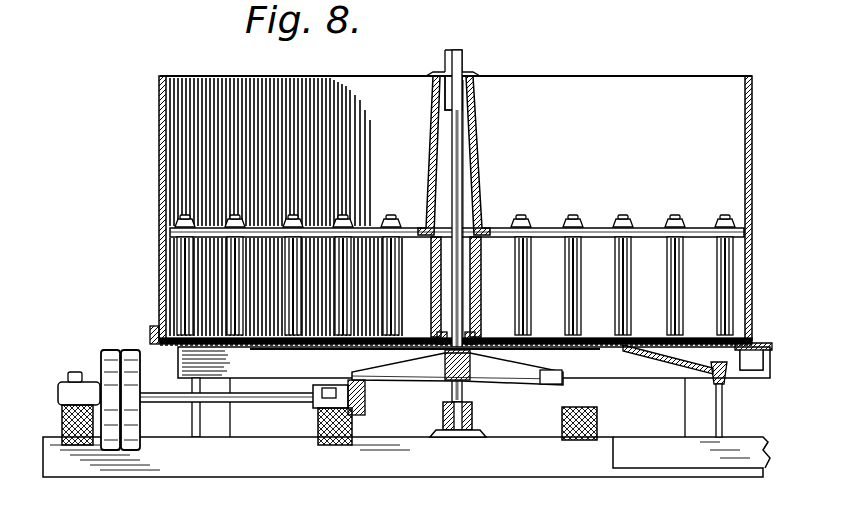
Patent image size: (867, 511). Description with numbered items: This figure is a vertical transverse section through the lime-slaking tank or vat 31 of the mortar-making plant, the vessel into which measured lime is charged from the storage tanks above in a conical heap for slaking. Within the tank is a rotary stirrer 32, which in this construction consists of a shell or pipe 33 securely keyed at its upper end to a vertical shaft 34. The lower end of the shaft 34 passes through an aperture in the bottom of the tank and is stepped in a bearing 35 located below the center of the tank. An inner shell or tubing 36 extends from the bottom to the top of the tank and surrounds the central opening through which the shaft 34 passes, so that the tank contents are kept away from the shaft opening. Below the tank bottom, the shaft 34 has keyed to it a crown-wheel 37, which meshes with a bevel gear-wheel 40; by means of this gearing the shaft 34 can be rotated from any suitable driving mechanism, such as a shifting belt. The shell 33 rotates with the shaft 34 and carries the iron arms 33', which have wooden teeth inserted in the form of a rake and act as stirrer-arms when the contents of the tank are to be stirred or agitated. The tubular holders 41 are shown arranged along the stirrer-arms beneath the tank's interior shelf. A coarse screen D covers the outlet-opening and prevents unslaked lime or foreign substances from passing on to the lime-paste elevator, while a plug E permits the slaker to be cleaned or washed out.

The lime-slaking tank or vat 31 is at (158, 124).
The rotary stirrer 32 is at (465, 200).
The shell or pipe 33 is at (441, 142).
The iron arms 33' is at (457, 208).
The vertical shaft 34 is at (462, 150).
The bearing 35 is at (467, 418).
The inner shell or tubing 36 is at (478, 258).
The crown-wheel 37 is at (457, 367).
The bevel gear-wheel 40 is at (366, 405).
The tubes 41 is at (397, 293).
The coarse screen D is at (690, 350).
The plug E is at (727, 380).